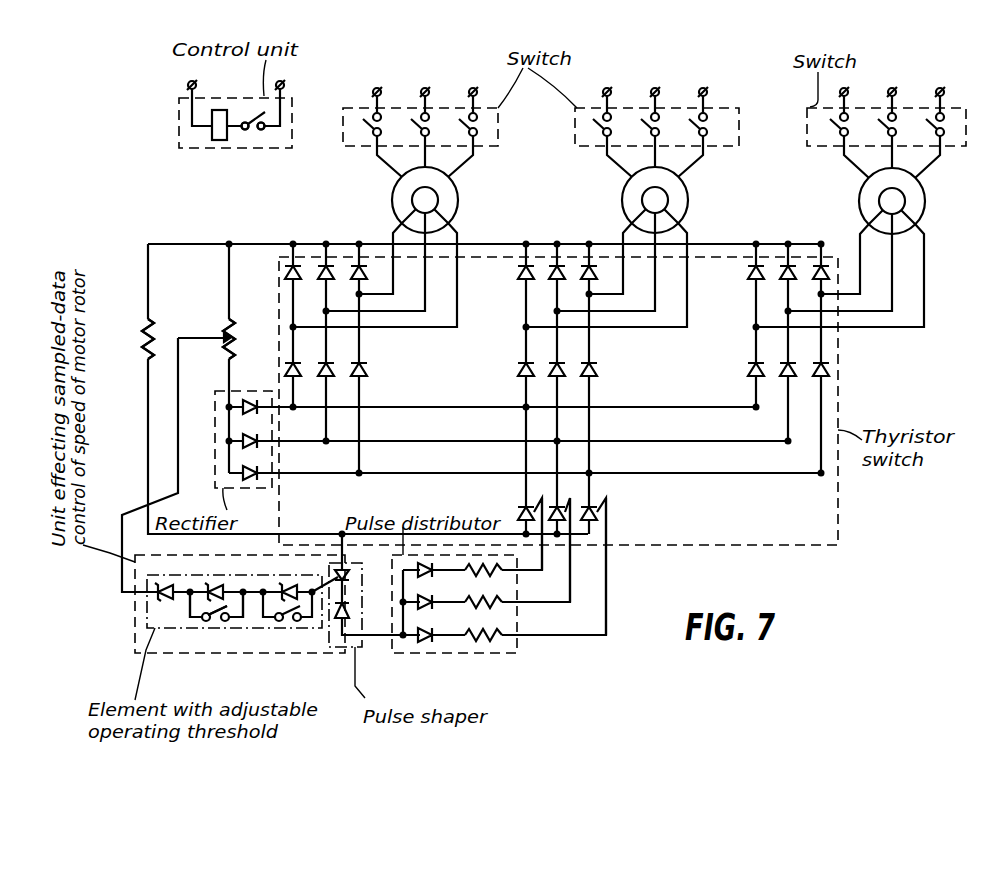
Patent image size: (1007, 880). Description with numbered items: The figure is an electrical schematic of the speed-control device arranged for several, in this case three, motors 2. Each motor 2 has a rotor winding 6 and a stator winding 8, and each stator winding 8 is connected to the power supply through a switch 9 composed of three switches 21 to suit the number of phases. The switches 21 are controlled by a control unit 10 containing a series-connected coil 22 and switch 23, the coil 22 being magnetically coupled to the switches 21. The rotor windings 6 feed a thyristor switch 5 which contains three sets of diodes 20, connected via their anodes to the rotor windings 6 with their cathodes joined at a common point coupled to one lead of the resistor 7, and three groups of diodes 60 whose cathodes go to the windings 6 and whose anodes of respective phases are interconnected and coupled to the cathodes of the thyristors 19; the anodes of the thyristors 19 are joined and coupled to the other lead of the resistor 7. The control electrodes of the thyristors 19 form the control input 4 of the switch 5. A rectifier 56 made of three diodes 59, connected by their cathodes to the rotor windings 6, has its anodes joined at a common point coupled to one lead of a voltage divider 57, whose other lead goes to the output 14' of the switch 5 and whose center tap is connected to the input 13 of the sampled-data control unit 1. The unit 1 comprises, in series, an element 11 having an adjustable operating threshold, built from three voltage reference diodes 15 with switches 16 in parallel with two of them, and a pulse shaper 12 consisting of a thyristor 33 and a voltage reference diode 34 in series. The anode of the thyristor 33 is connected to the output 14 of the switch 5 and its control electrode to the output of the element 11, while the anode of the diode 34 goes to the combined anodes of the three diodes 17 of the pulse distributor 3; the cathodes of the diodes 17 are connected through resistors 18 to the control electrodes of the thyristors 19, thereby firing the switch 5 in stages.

The unit effecting sampled-data control 1 is at (130, 608).
The motor 2 is at (688, 195).
The pulse distributor 3 is at (462, 660).
The control input of thyristor switch 4 is at (607, 548).
The thyristor switch 5 is at (843, 411).
The rotor winding 6 is at (438, 197).
The resistor 7 is at (146, 332).
The stator winding 8 is at (458, 212).
The switch 9 is at (341, 130).
The control unit 10 is at (178, 128).
The element having an adjustable operating threshold 11 is at (297, 635).
The pulse shaper 12 is at (327, 638).
The input of element 13 is at (145, 588).
The output of thyristor switch 14 is at (247, 525).
The output of thyristor switch 14' is at (216, 225).
The voltage reference diode 15 is at (226, 607).
The switch 16 is at (212, 625).
The diode 17 is at (428, 640).
The resistor 18 is at (500, 632).
The thyristor 19 is at (597, 512).
The diode 20 is at (285, 271).
The switch 21 is at (412, 127).
The coil 22 is at (218, 110).
The switch 23 is at (251, 131).
The thyristor 33 is at (345, 573).
The voltage reference diode 34 is at (344, 612).
The rectifier 56 is at (213, 412).
The voltage divider 57 is at (231, 325).
The diode 59 is at (250, 401).
The diode 60 is at (368, 371).